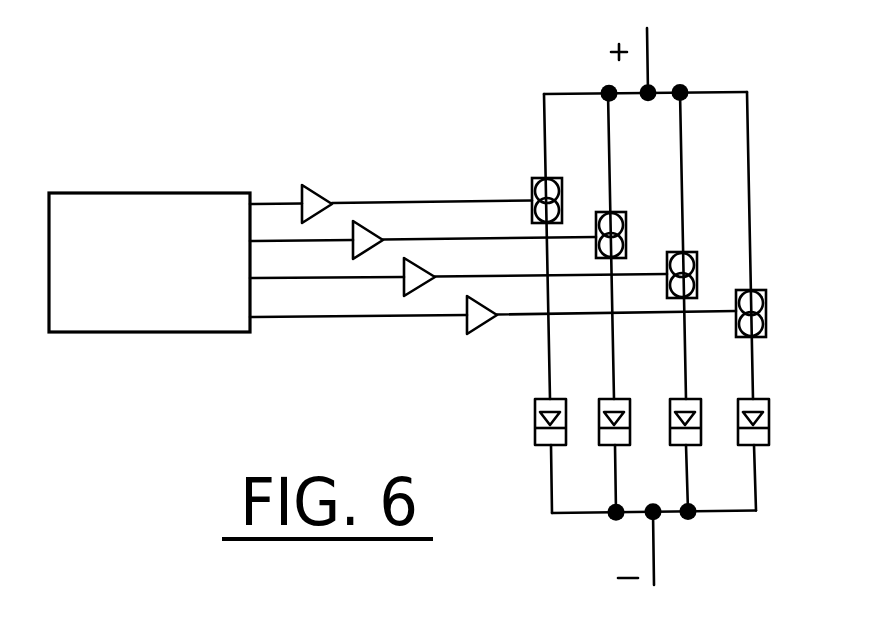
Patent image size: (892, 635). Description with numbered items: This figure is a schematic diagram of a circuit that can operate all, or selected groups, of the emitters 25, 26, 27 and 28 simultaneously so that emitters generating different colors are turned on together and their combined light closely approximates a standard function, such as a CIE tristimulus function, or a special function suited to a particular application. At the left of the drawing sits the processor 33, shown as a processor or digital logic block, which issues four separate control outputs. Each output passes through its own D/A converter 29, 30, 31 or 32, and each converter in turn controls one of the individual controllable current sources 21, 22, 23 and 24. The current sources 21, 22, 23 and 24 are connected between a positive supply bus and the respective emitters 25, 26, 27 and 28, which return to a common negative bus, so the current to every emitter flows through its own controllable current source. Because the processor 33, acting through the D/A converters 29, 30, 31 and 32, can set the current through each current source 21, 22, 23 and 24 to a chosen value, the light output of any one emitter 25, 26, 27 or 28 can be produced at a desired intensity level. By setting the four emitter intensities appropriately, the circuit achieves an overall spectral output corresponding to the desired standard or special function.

The controllable current source 21 is at (559, 178).
The controllable current source 22 is at (622, 212).
The controllable current source 23 is at (696, 252).
The controllable current source 24 is at (764, 290).
The emitter 25 is at (535, 432).
The emitter 26 is at (630, 438).
The emitter 27 is at (701, 438).
The emitter 28 is at (769, 425).
The D/A converter 29 is at (316, 192).
The D/A converter 30 is at (371, 229).
The D/A converter 31 is at (414, 268).
The D/A converter 32 is at (484, 334).
The processor 33 is at (187, 333).